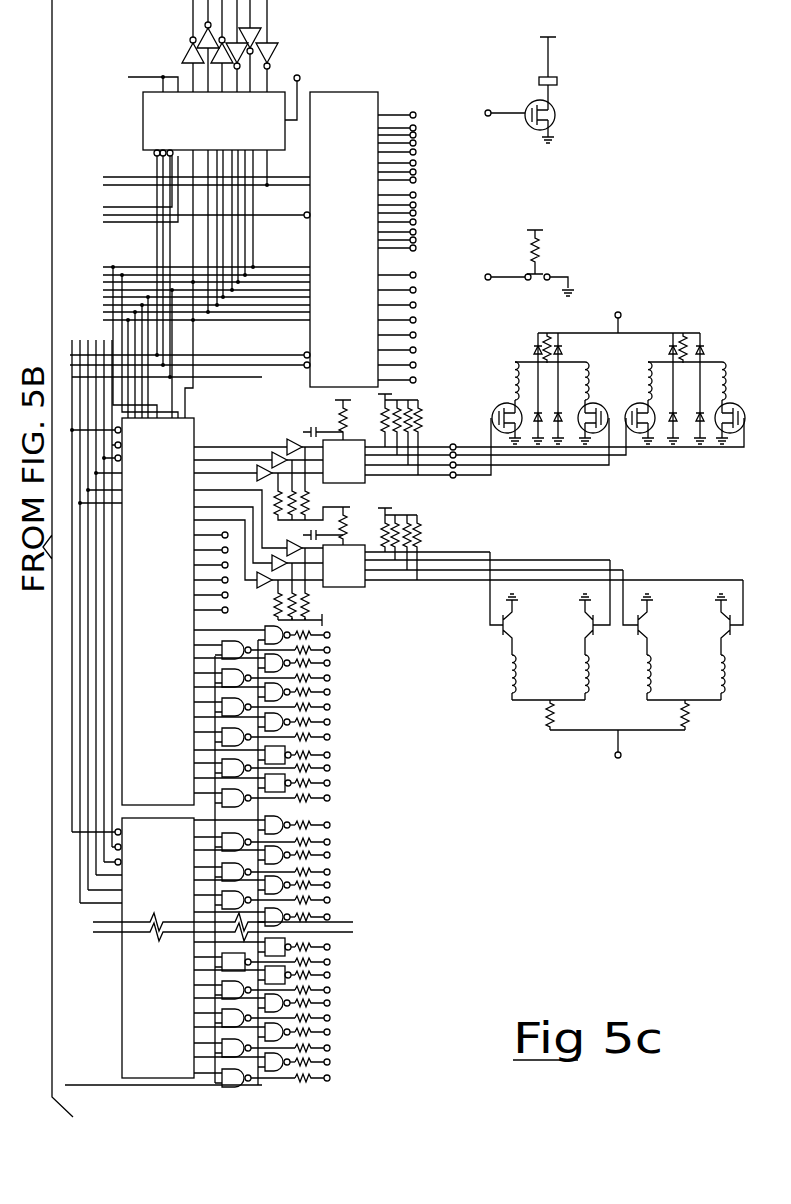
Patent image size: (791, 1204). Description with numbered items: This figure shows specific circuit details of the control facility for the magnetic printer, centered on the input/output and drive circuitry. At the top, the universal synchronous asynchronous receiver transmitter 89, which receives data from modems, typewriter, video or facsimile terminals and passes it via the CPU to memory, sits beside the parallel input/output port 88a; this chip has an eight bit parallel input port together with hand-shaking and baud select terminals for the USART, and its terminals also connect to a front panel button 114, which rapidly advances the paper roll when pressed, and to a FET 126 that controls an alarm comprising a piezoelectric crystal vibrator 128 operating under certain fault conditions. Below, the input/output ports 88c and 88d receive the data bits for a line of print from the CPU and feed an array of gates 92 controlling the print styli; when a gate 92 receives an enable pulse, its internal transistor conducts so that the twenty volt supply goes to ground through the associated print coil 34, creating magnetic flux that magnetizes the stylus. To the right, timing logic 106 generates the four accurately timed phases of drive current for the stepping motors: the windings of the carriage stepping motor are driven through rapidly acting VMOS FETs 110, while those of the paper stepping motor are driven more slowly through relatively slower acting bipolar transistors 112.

The print coil 34 is at (312, 762).
The parallel input/output port 88a is at (363, 239).
The parallel input/output port 88c is at (175, 611).
The parallel input/output port 88d is at (158, 948).
The universal synchronous asynchronous receiver transmitter 89 is at (214, 115).
The gate 92 is at (262, 865).
The timing logic 106 is at (468, 510).
The VMOS FET 110 is at (507, 402).
The bipolar transistor 112 is at (717, 634).
The front panel button 114 is at (548, 258).
The FET 126 is at (529, 128).
The piezoelectric crystal vibrator 128 is at (562, 82).